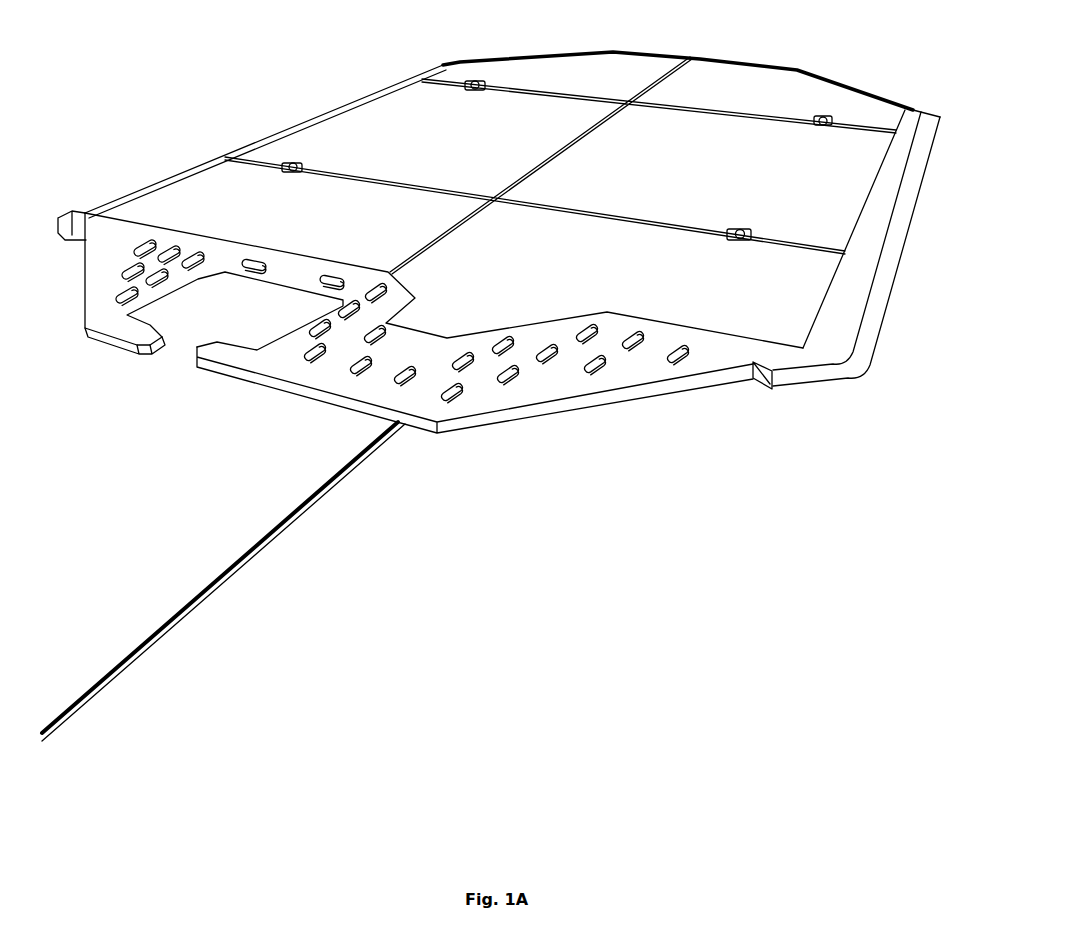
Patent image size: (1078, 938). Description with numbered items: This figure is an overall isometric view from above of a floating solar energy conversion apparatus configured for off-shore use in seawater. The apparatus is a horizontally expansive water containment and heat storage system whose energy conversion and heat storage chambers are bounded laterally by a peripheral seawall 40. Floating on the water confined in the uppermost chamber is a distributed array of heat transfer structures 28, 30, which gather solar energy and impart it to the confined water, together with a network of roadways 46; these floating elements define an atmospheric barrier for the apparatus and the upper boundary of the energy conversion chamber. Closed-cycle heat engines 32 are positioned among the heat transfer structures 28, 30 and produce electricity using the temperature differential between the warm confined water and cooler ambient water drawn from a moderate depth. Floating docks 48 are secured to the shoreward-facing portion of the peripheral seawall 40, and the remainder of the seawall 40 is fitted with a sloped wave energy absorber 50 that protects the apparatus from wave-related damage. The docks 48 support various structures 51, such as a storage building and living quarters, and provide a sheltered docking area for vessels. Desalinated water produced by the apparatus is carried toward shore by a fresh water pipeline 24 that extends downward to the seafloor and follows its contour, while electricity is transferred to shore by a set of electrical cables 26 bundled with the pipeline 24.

The fresh water pipeline 24 is at (217, 577).
The electrical cables 26 is at (282, 533).
The heat transfer structure 28 is at (502, 191).
The heat transfer structure 30 is at (820, 268).
The closed-cycle heat engine 32 is at (740, 232).
The peripheral seawall 40 is at (828, 315).
The network of roadways 46 is at (703, 110).
The floating docks 48 is at (273, 363).
The sloped wave energy absorber 50 is at (763, 385).
The structures 51 is at (508, 374).